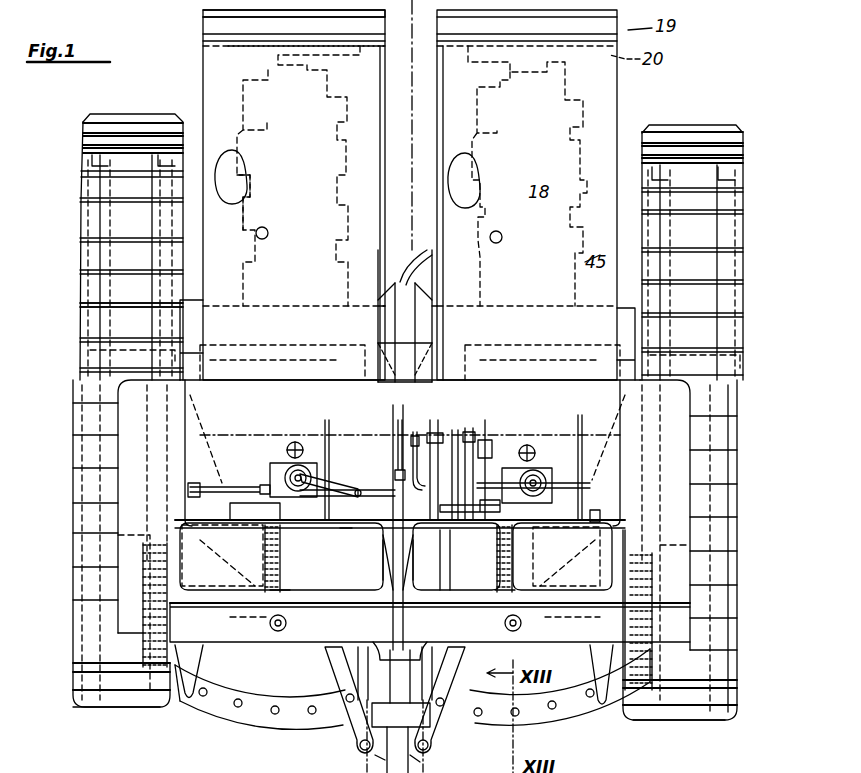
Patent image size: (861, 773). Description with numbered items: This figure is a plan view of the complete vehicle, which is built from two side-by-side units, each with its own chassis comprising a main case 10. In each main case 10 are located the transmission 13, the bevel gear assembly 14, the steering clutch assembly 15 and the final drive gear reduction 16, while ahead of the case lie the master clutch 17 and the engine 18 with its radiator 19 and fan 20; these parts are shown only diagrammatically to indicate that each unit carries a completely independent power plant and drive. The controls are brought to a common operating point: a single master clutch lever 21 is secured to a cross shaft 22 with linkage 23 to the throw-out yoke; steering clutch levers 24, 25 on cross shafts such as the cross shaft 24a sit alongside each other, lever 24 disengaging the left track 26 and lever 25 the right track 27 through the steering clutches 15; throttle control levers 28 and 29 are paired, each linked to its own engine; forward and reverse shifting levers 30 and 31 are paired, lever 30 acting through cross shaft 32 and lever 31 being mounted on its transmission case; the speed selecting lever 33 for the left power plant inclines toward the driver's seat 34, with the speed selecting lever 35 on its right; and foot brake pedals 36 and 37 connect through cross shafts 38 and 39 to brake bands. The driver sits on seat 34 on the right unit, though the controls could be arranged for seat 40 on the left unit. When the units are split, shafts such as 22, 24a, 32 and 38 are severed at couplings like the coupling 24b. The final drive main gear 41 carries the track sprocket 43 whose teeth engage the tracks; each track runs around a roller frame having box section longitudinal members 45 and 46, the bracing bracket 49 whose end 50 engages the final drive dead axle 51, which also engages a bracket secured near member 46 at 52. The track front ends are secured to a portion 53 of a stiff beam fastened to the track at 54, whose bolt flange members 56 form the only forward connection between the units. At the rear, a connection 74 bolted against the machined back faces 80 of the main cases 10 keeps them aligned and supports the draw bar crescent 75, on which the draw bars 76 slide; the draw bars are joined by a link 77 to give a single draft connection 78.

The main case 10 is at (232, 425).
The transmission 13 is at (268, 476).
The bevel gear assembly 14 is at (300, 535).
The steering clutch assembly 15 is at (210, 555).
The final drive gear reduction 16 is at (150, 535).
The master clutch 17 is at (300, 377).
The engine 18 is at (308, 201).
The radiator 19 is at (203, 24).
The fan 20 is at (228, 50).
The master clutch lever 21 is at (413, 432).
The cross shaft 22 is at (332, 480).
The linkage 23 is at (330, 460).
The steering clutch lever 24 is at (452, 430).
The cross shaft 24a is at (458, 546).
The coupling 24b is at (374, 560).
The steering clutch lever 25 is at (466, 428).
The left track 26 is at (80, 242).
The right track 27 is at (745, 247).
The throttle control lever 28 is at (390, 590).
The throttle control lever 29 is at (409, 590).
The forward and reverse transmission shifting lever 30 is at (470, 494).
The forward and reverse transmission shifting lever 31 is at (535, 470).
The cross shaft 32 is at (400, 470).
The speed selecting lever 33 is at (338, 506).
The driver's seat 34 is at (473, 570).
The speed selecting lever 35 is at (560, 490).
The foot brake pedal 36 is at (438, 470).
The foot brake pedal 37 is at (476, 470).
The cross shaft 38 is at (385, 553).
The cross shaft 39 is at (602, 515).
The seat 40 is at (352, 570).
The final drive main gear 41 is at (145, 708).
The track sprocket 43 is at (110, 710).
The box section longitudinal member 45 is at (228, 242).
The box section longitudinal member 46 is at (80, 287).
The bracing bracket 49 is at (275, 597).
The end of bracket 50 is at (250, 628).
The final drive dead axle 51 is at (183, 638).
The bracket location 52 is at (73, 622).
The portion of stiff beam 53 is at (325, 302).
The beam-to-track securing point 54 is at (80, 345).
The bolt flange member 56 is at (412, 262).
The rear connection 74 is at (412, 730).
The draw bar crescent 75 is at (270, 722).
The draw bar 76 is at (350, 735).
The link 77 is at (380, 758).
The draft connection 78 is at (412, 762).
The machined back face 80 is at (378, 648).